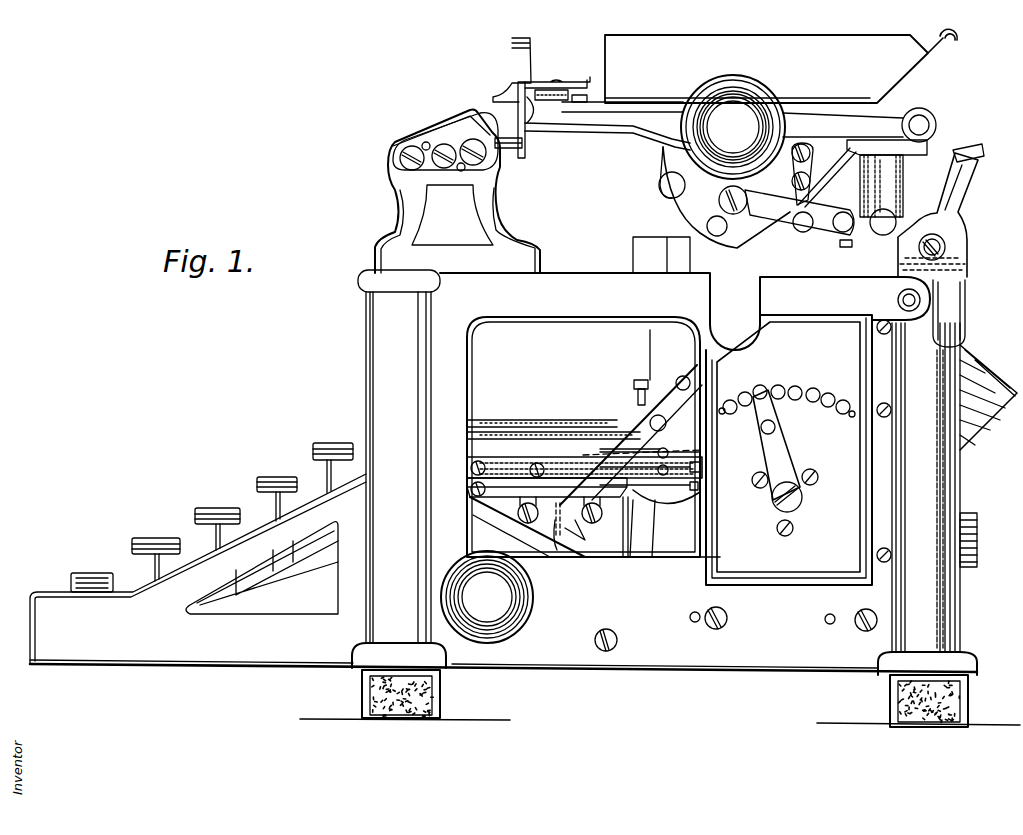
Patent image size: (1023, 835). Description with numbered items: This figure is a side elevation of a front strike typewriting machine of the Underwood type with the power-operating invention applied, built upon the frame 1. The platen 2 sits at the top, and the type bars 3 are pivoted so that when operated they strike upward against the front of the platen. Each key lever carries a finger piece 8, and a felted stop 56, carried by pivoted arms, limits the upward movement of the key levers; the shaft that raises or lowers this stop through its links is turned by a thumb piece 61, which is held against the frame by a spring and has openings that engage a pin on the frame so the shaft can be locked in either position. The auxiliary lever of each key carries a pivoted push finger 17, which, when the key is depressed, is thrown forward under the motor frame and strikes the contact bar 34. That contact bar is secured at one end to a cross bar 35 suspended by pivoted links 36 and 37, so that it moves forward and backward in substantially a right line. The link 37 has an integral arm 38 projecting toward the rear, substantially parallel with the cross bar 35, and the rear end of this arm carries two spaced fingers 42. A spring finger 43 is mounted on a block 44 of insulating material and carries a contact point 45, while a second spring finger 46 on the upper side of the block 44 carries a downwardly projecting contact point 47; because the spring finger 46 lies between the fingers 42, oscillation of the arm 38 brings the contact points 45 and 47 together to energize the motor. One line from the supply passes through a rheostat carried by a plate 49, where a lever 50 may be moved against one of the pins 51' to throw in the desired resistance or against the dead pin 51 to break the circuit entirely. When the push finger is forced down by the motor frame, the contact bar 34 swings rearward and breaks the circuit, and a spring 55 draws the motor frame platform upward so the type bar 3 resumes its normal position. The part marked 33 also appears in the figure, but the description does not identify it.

The frame 1 is at (450, 357).
The platen 2 is at (707, 118).
The type bars 3 is at (526, 430).
The finger piece 8 is at (180, 517).
The push finger 17 is at (574, 518).
The pawl 33 is at (968, 432).
The contact bar 34 is at (580, 540).
The cross bar 35 is at (557, 540).
The pivoted link 36 is at (591, 509).
The link 37 is at (524, 499).
The arm 38 is at (640, 464).
The spaced fingers 42 is at (676, 455).
The spring finger 43 is at (684, 510).
The block 44 is at (503, 465).
The contact point 45 is at (700, 487).
The second spring finger 46 is at (688, 453).
The contact point 47 is at (701, 468).
The plate 49 is at (807, 532).
The lever 50 is at (782, 452).
The dead pin 51 is at (736, 394).
The pins 51' is at (810, 389).
The spring 55 is at (636, 399).
The felted stop 56 is at (494, 516).
The thumb piece 61 is at (487, 597).